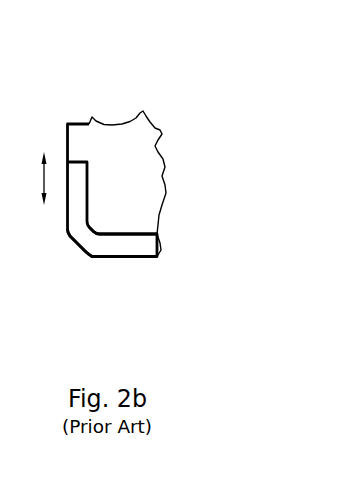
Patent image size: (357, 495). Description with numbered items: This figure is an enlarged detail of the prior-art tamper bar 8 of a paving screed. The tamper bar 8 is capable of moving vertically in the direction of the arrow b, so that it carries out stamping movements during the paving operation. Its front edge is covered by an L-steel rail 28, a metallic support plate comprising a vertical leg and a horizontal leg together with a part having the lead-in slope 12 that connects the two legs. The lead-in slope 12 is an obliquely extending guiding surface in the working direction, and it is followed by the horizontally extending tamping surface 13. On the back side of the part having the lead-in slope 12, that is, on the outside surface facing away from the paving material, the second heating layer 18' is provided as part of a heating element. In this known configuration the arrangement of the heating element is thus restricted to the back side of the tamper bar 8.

The tamper bar 8 is at (90, 148).
The second heating layer 18' is at (153, 198).
The lead-in slope 12 is at (79, 246).
The L-steel rail 28 is at (92, 243).
The tamping surface 13 is at (110, 257).
The direction of vertical movement b is at (34, 178).